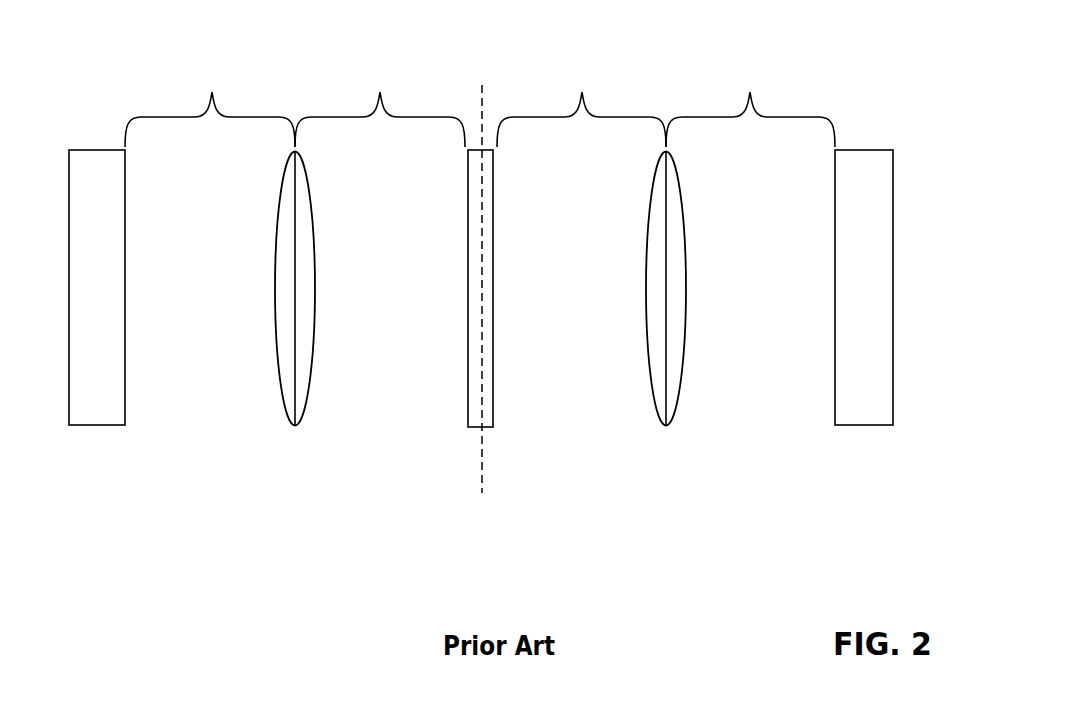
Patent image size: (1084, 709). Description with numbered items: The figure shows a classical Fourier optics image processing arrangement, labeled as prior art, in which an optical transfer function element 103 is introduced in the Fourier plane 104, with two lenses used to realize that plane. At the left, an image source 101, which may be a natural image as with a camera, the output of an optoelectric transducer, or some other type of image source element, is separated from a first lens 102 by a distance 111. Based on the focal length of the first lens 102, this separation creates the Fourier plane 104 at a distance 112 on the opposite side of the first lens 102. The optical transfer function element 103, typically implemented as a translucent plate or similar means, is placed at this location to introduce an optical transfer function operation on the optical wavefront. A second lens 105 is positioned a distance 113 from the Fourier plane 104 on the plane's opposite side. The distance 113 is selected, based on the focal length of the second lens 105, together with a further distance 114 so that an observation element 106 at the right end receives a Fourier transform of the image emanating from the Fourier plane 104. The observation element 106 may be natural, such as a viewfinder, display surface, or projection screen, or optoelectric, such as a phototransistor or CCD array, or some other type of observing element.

The image source 101 is at (78, 181).
The first lens 102 is at (297, 432).
The optical transfer function element 103 is at (498, 417).
The Fourier plane 104 is at (475, 486).
The second lens 105 is at (668, 432).
The observation element 106 is at (882, 181).
The distance 111 is at (210, 104).
The distance 112 is at (380, 104).
The distance 113 is at (581, 104).
The distance 114 is at (750, 104).